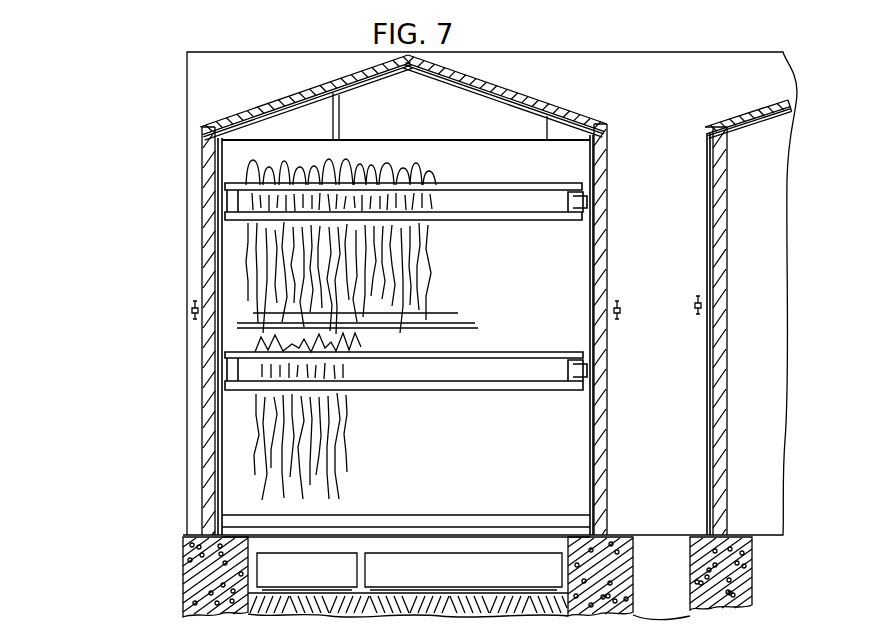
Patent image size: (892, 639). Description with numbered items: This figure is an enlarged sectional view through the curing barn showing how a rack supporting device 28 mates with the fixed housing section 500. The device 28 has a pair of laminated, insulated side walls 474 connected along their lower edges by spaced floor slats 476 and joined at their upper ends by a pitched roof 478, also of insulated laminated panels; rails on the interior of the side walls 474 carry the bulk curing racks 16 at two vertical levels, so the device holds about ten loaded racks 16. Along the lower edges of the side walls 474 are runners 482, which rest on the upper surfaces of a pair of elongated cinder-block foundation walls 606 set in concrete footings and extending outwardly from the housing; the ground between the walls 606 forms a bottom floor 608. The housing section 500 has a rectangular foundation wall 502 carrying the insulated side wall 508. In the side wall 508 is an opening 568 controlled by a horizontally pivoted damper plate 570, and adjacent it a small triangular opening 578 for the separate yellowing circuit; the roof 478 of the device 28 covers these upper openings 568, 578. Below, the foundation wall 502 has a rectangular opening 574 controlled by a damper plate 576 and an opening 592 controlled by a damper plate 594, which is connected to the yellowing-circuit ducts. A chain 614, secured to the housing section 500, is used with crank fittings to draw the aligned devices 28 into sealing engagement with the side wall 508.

The fixed curing barn housing section 500 is at (187, 80).
The rack supporting device 28 is at (200, 128).
The side wall 474 is at (201, 270).
The chain 614 is at (193, 312).
The pitched roof 478 is at (485, 83).
The damper plate 570 is at (418, 124).
The opening 568 is at (445, 133).
The triangular opening 578 is at (292, 134).
The bulk curing rack 16 is at (507, 222).
The floor slat 476 is at (443, 522).
The foundation wall 502 is at (414, 543).
The runner 482 is at (186, 561).
The elongated foundation wall 606 is at (186, 598).
The bottom floor 608 is at (356, 598).
The damper plate 594 is at (307, 577).
The damper plate 576 is at (531, 577).
The opening 592 is at (325, 584).
The rectangular opening 574 is at (433, 585).
The side wall 508 is at (668, 165).